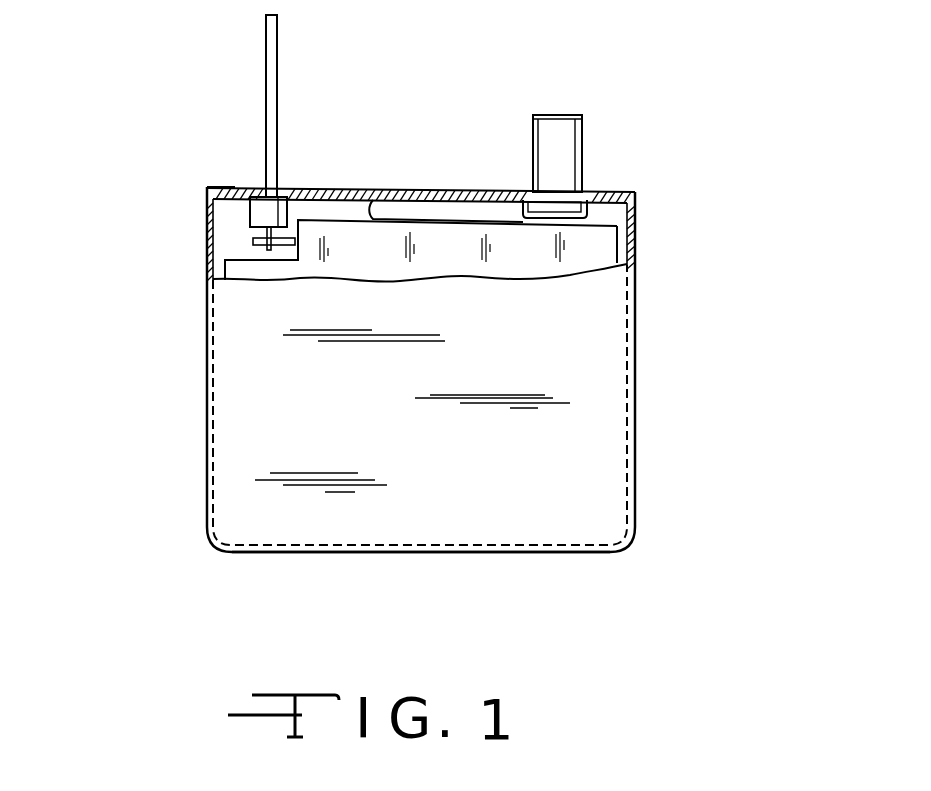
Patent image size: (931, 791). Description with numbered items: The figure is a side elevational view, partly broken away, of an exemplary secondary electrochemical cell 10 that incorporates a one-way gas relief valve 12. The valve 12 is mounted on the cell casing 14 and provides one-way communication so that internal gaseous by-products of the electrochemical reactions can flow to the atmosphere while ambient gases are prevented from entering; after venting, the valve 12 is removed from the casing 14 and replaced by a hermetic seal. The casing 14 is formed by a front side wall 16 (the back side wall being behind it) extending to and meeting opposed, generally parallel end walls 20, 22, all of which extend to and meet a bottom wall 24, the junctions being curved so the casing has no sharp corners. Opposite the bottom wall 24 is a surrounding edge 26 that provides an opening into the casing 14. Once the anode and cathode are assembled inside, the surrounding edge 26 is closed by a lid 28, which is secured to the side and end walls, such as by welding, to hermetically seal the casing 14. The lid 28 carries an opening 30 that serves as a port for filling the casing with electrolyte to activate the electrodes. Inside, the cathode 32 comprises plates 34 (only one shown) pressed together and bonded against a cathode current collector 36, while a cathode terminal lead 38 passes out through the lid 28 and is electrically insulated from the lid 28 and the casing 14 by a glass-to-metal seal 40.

The secondary electrochemical cell 10 is at (708, 185).
The one-way gas relief valve 12 is at (596, 145).
The cell casing 14 is at (635, 427).
The front side wall 16 is at (597, 488).
The end wall 20 is at (205, 414).
The end wall 22 is at (635, 355).
The bottom wall 24 is at (552, 555).
The surrounding edge 26 is at (217, 187).
The lid 28 is at (428, 189).
The opening 30 is at (589, 191).
The cathode 32 is at (373, 200).
The plate 34 is at (602, 251).
The cathode current collector 36 is at (292, 237).
The cathode terminal lead 38 is at (278, 67).
The glass-to-metal seal 40 is at (250, 215).